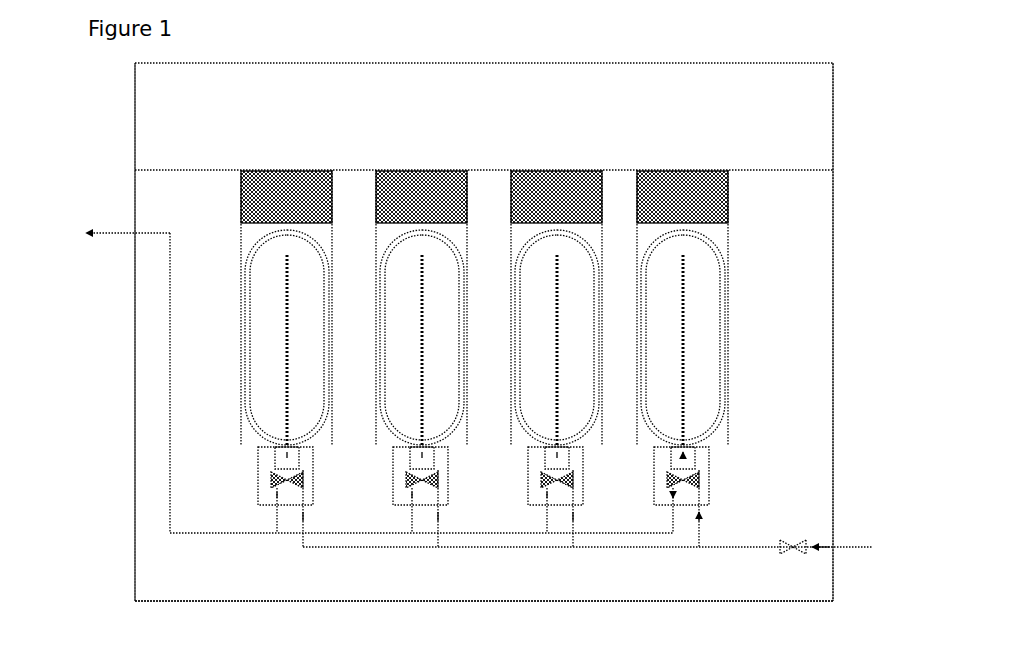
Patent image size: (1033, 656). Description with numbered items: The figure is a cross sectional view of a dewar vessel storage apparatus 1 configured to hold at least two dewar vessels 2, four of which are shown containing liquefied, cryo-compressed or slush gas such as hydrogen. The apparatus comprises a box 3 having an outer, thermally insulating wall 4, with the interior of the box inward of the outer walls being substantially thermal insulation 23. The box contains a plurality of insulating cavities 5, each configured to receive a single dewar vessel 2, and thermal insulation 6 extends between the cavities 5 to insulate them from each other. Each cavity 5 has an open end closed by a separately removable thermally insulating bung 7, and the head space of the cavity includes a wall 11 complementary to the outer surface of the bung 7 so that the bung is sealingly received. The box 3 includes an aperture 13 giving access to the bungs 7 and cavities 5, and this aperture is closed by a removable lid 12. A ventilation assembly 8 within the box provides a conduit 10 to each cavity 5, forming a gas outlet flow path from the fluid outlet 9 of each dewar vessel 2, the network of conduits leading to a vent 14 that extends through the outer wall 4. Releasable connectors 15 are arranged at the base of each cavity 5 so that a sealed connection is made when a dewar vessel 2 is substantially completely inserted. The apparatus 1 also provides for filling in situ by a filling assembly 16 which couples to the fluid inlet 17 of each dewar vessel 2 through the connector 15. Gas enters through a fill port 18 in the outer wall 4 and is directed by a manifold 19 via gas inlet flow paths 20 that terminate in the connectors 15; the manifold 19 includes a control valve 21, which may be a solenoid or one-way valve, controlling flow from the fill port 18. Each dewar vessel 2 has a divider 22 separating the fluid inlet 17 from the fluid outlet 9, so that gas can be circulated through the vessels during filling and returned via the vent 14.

The dewar vessel storage apparatus 1 is at (78, 144).
The dewar vessel 2 is at (370, 403).
The box 3 is at (133, 431).
The outer wall 4 is at (130, 478).
The insulating cavity 5 is at (246, 243).
The thermal insulation 6 is at (349, 278).
The thermally insulating bung 7 is at (283, 195).
The ventilation assembly 8 is at (213, 538).
The fluid outlet 9 is at (266, 455).
The conduit 10 is at (272, 528).
The head space wall 11 is at (243, 195).
The removable lid 12 is at (160, 108).
The aperture 13 is at (163, 173).
The vent 14 is at (117, 235).
The releasable connector 15 is at (291, 538).
The dewar vessel filling assembly 16 is at (736, 553).
The fluid inlet 17 is at (311, 475).
The fill port 18 is at (838, 549).
The manifold 19 is at (718, 547).
The gas inlet flow path 20 is at (306, 520).
The control valve 21 is at (793, 552).
The divider 22 is at (281, 356).
The thermal insulation 23 is at (780, 305).